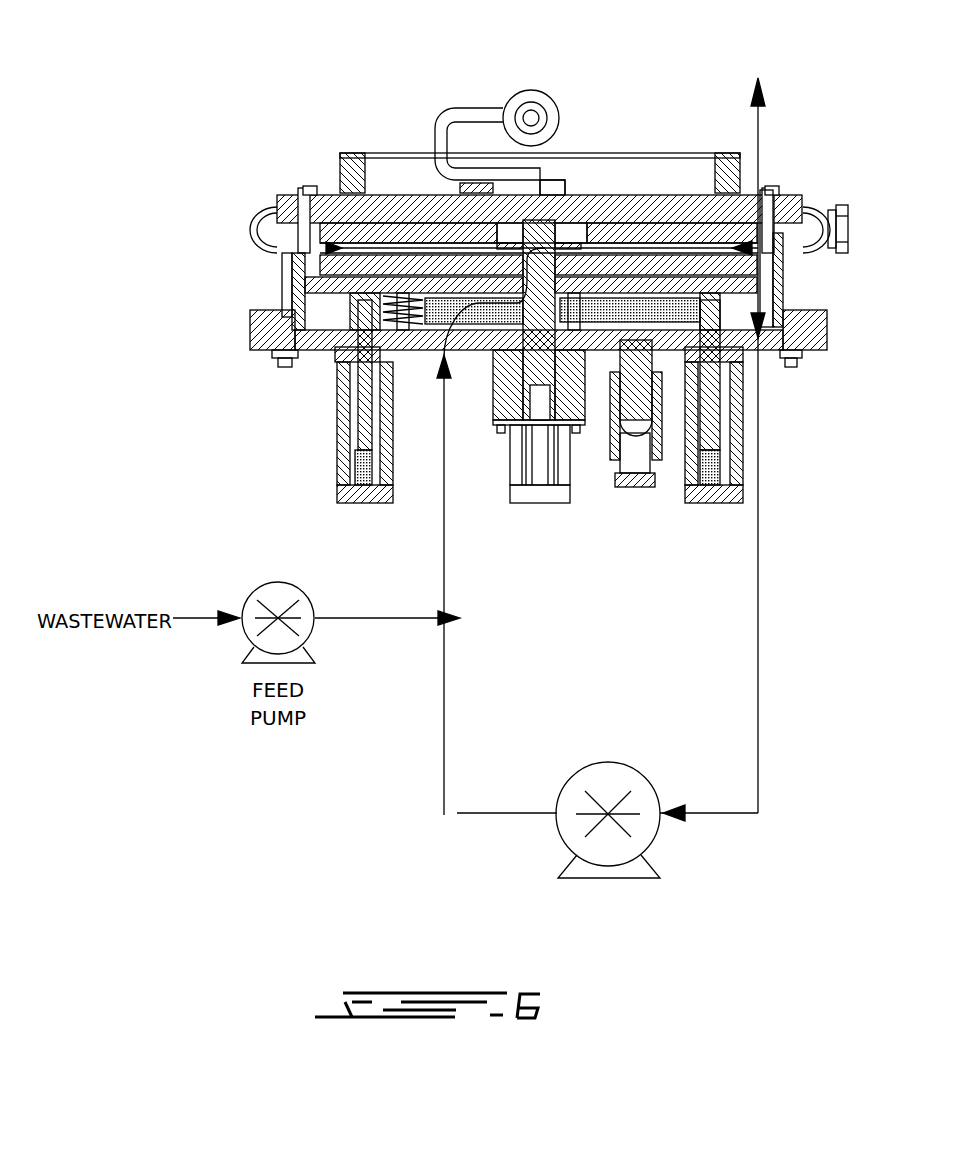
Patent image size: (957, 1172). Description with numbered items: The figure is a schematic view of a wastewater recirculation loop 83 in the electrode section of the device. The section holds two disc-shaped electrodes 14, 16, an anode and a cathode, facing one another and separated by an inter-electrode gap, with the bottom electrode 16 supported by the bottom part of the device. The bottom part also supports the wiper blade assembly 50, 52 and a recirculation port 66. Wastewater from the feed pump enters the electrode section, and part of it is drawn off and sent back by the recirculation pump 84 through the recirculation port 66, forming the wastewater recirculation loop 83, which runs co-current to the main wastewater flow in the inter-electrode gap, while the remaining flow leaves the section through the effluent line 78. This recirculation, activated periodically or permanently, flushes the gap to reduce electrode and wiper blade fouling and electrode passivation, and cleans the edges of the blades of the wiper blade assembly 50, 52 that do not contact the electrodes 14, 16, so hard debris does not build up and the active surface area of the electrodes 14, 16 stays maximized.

The disc-shaped electrode 14 is at (688, 226).
The bottom electrode 16 is at (748, 264).
The wiper blade assembly 50 is at (330, 247).
The wiper blade assembly 52 is at (647, 347).
The recirculation port 66 is at (425, 362).
The effluent outlet 78 is at (761, 128).
The wastewater recirculation loop 83 is at (770, 642).
The pump 84 is at (698, 848).